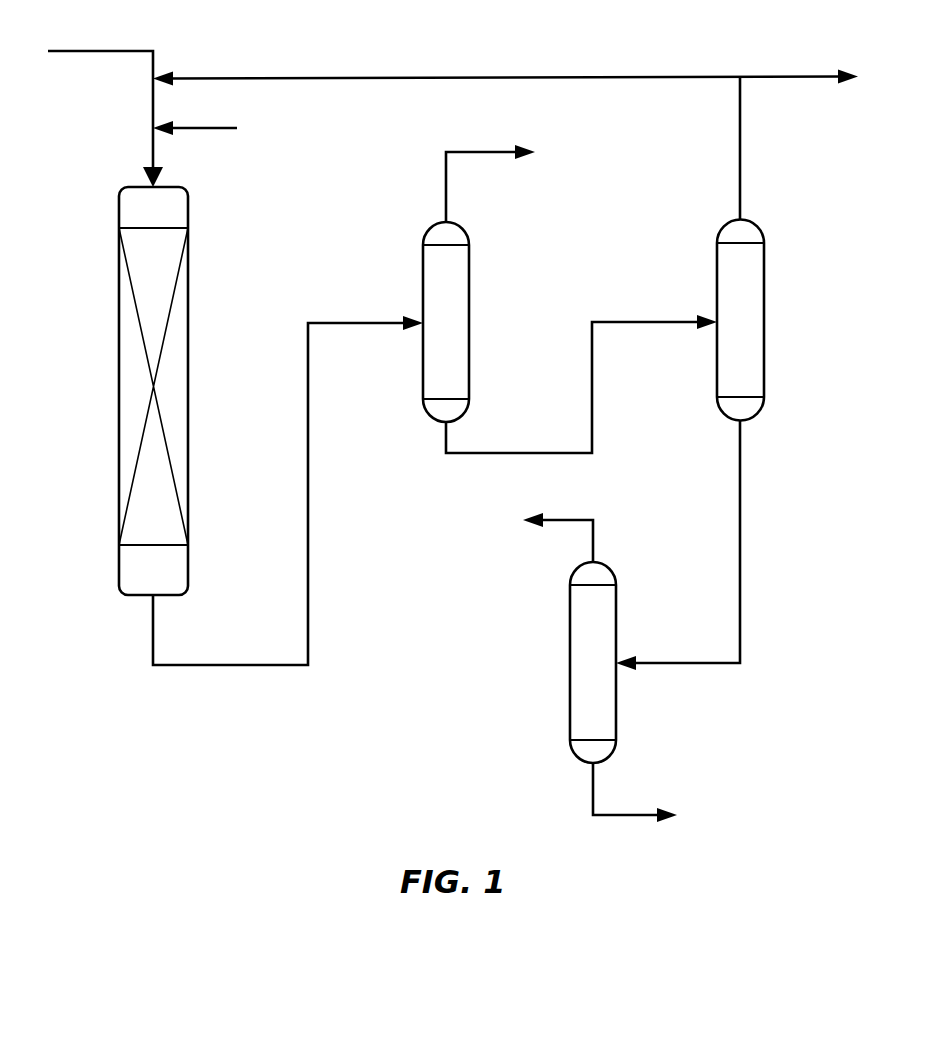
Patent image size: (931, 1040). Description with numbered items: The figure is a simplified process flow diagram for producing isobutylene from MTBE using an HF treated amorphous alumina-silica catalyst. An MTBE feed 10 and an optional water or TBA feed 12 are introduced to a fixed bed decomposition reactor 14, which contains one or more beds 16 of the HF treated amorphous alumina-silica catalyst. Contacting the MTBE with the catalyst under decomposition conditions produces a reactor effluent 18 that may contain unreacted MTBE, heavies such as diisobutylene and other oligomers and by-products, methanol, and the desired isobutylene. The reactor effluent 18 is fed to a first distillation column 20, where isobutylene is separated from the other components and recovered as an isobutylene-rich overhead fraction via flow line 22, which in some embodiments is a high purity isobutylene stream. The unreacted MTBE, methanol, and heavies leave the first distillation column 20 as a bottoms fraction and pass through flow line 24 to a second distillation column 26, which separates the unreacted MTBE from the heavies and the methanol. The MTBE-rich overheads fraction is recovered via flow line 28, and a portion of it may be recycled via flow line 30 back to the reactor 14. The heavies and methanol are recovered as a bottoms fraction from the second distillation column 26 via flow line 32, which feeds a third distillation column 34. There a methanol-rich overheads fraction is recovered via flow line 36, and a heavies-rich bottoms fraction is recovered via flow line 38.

The MTBE feed 10 is at (101, 50).
The water or TBA feed 12 is at (205, 130).
The fixed bed decomposition reactor 14 is at (119, 210).
The bed 16 is at (128, 335).
The reactor effluent 18 is at (308, 522).
The first distillation column 20 is at (446, 322).
The flow line 22 is at (480, 150).
The flow line 24 is at (520, 455).
The second distillation column 26 is at (740, 320).
The flow line 28 is at (740, 185).
The flow line 30 is at (610, 76).
The flow line 32 is at (740, 540).
The third distillation column 34 is at (593, 662).
The flow line 36 is at (593, 540).
The flow line 38 is at (635, 813).